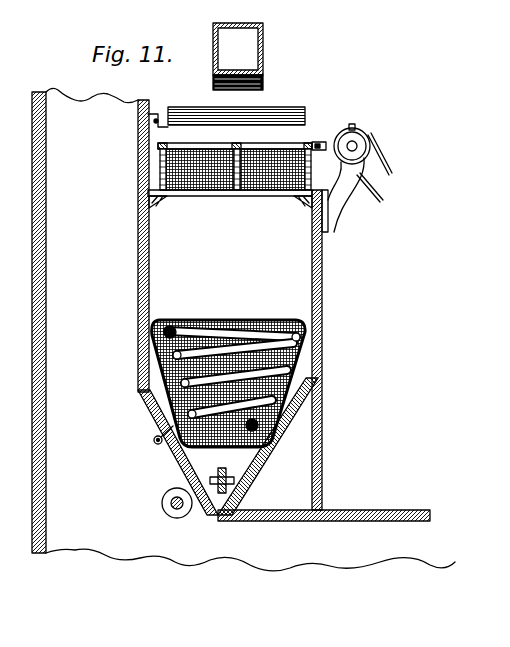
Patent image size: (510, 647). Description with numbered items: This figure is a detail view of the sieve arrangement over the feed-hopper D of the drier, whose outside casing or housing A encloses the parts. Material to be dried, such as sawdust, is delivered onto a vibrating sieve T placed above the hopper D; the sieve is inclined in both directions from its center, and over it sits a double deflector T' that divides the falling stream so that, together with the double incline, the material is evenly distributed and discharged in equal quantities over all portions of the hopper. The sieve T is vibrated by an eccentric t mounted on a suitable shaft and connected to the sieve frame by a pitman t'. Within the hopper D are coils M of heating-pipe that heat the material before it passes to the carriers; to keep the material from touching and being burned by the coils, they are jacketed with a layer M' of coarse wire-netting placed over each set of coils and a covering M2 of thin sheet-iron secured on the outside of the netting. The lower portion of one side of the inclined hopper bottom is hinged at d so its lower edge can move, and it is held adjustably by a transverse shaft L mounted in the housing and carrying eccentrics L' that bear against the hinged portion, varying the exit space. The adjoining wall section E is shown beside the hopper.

The chamber / casing wall E is at (90, 320).
The double deflector T' is at (226, 106).
The vibrating sieve T is at (230, 181).
The pitman t' is at (319, 134).
The eccentric t is at (357, 178).
The feed-hopper D is at (230, 352).
The outside casing or housing A is at (324, 505).
The coils of heating-pipe M is at (228, 372).
The covering of thin sheet-iron M2 is at (298, 362).
The layer of coarse wire-netting M' is at (286, 442).
The hinge d is at (153, 442).
The transverse shaft L is at (162, 508).
The eccentrics L' is at (184, 520).